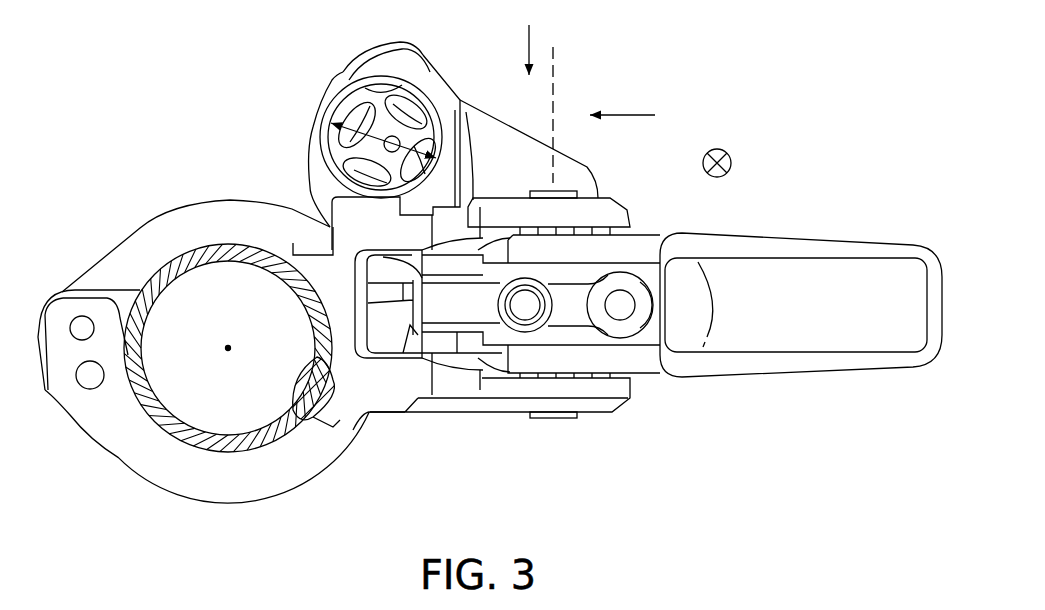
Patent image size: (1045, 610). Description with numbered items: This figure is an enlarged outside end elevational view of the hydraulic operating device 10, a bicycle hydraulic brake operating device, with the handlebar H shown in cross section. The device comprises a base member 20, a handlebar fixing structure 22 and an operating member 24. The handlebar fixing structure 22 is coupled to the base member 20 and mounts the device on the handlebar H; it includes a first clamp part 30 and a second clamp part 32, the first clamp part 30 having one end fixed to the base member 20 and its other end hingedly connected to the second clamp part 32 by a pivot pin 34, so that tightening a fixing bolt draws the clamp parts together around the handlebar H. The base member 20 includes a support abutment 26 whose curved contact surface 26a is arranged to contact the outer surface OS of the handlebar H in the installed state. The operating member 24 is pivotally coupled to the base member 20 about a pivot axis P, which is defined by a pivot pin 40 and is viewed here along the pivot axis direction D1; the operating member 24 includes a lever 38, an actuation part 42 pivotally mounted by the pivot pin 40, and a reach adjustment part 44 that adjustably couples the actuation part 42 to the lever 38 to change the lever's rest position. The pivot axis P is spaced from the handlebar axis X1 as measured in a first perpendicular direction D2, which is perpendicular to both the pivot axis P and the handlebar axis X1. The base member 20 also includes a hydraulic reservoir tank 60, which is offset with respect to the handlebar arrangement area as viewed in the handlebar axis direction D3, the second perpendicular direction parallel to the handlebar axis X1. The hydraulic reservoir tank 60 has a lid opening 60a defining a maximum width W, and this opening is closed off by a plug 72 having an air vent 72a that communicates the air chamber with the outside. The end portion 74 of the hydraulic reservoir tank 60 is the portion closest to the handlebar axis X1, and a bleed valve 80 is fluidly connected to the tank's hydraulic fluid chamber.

The hydraulic operating device 10 is at (766, 43).
The base member 20 is at (435, 414).
The handlebar fixing structure 22 is at (200, 510).
The operating member 24 is at (712, 394).
The support abutment 26 is at (307, 265).
The curved contact surface 26a is at (300, 382).
The first clamp part 30 is at (281, 472).
The second clamp part 32 is at (158, 250).
The pivot pin 34 is at (82, 390).
The lever 38 is at (820, 237).
The pivot pin 40 is at (565, 192).
The actuation part 42 is at (465, 342).
The reach adjustment part 44 is at (641, 345).
The hydraulic reservoir tank 60 is at (487, 117).
The lid opening 60a is at (406, 82).
The plug 72 is at (353, 105).
The air vent 72a is at (389, 152).
The end portion 74 is at (310, 172).
The bleed valve 80 is at (371, 49).
The handlebar H is at (158, 443).
The outer surface OS is at (238, 458).
The handlebar axis X1 is at (229, 346).
The pivot axis P is at (555, 72).
The maximum width W is at (333, 154).
The pivot axis direction D1 is at (529, 33).
The first perpendicular direction D2 is at (630, 115).
The handlebar axis direction D3 is at (727, 152).